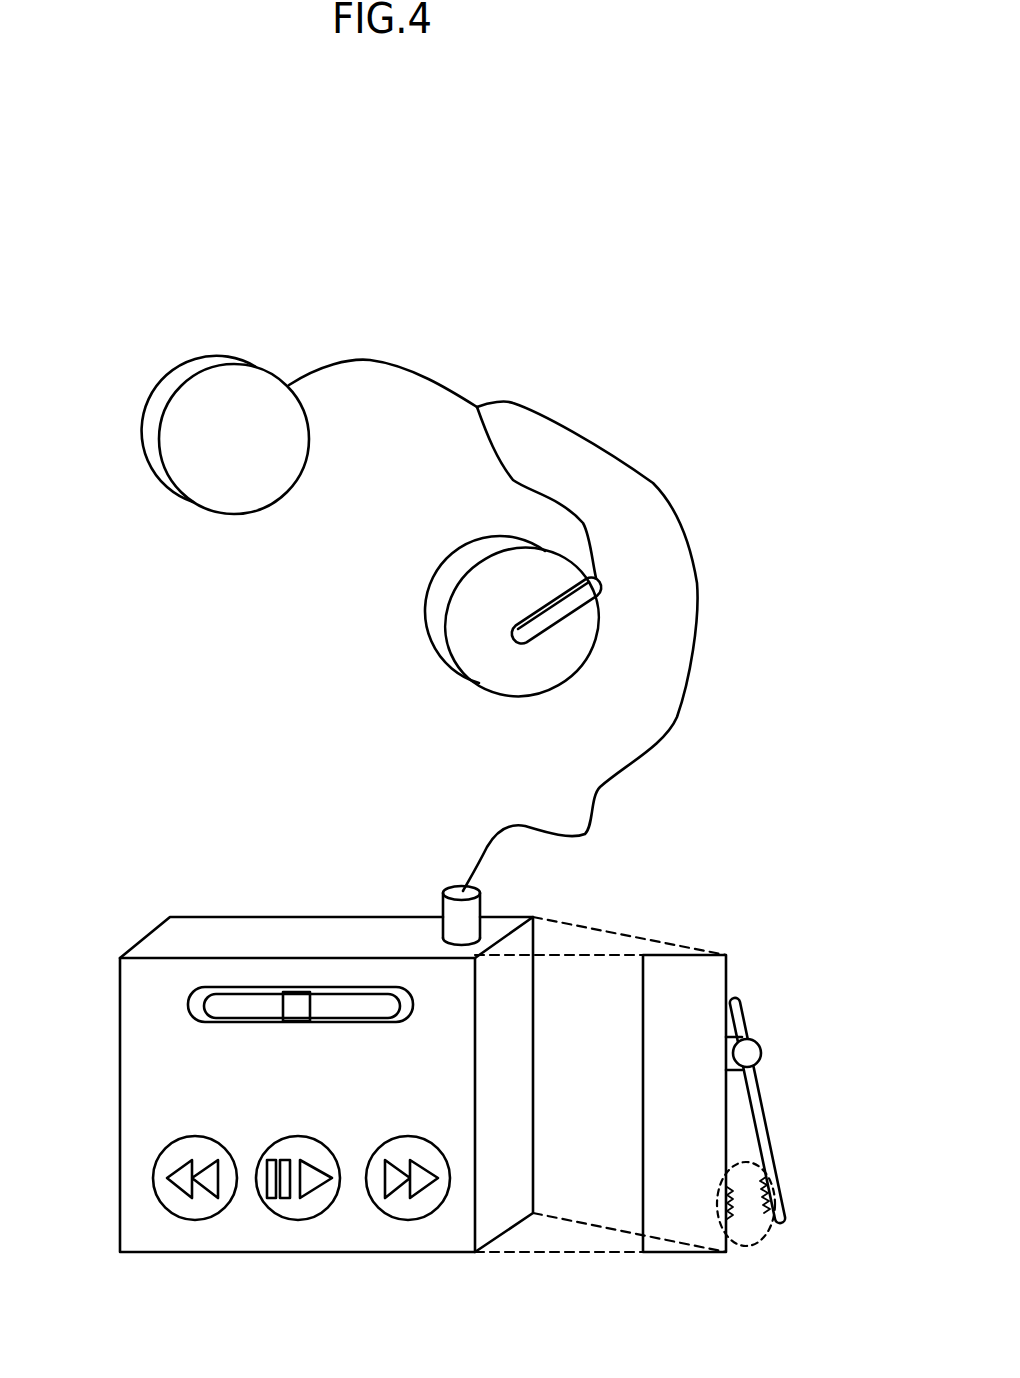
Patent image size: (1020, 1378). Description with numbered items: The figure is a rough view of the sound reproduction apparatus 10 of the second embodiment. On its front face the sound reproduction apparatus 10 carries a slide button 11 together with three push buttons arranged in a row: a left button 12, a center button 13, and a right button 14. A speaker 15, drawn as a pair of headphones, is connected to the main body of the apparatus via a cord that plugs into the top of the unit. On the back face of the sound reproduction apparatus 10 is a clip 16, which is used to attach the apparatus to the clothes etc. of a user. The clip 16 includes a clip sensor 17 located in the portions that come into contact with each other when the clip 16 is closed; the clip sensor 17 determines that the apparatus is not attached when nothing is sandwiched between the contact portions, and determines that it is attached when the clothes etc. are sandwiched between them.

The sound reproduction apparatus 10 is at (598, 314).
The slide button 11 is at (413, 1000).
The left button 12 is at (217, 1141).
The center button 13 is at (327, 1142).
The right button 14 is at (421, 1136).
The speaker 15 is at (428, 618).
The clip 16 is at (761, 1048).
The clip sensor 17 is at (760, 1240).